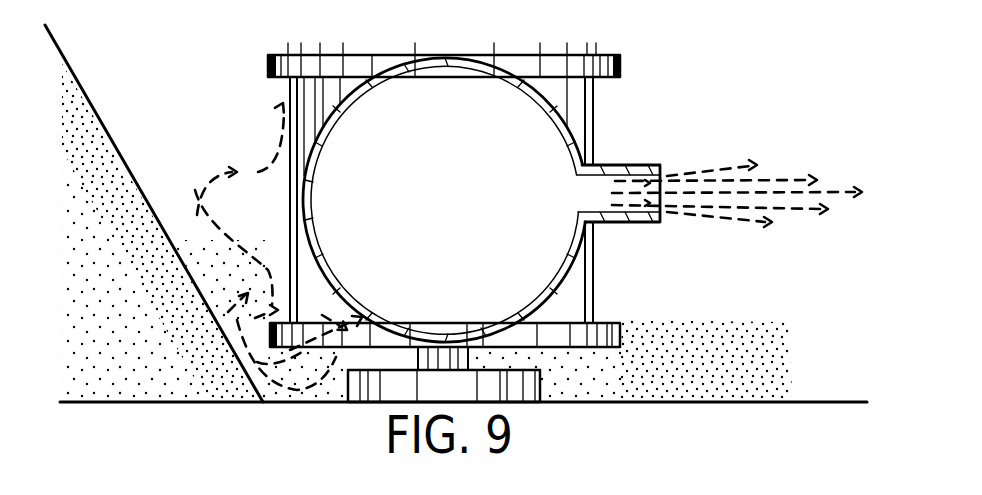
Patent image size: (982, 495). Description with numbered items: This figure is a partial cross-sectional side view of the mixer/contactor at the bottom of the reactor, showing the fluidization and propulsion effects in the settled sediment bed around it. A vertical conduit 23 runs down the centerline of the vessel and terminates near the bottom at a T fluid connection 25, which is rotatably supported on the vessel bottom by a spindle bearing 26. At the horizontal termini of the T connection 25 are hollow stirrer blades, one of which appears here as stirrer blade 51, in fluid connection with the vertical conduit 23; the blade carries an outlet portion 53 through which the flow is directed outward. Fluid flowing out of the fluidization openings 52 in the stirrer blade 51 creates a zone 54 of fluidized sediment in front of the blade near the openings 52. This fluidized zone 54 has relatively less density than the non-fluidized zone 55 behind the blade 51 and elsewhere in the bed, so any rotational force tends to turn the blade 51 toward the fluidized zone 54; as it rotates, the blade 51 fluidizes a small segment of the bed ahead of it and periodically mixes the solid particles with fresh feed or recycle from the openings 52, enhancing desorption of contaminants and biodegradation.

The vertical conduit 23 is at (597, 49).
The T fluid connection 25 is at (268, 57).
The spindle bearing 26 is at (536, 375).
The stirrer blade 51 is at (372, 86).
The fluidization openings 52 is at (362, 308).
The discharge nozzle 53 is at (626, 165).
The fluidized zone 54 is at (207, 149).
The non-fluidized zone 55 is at (146, 346).